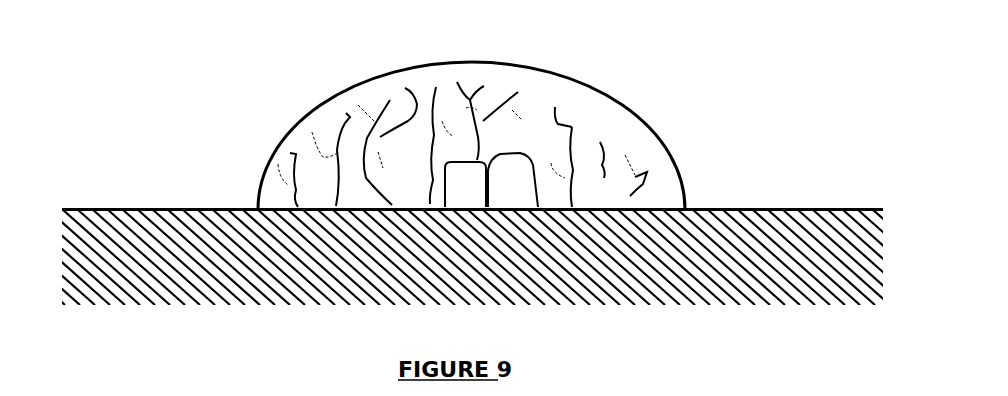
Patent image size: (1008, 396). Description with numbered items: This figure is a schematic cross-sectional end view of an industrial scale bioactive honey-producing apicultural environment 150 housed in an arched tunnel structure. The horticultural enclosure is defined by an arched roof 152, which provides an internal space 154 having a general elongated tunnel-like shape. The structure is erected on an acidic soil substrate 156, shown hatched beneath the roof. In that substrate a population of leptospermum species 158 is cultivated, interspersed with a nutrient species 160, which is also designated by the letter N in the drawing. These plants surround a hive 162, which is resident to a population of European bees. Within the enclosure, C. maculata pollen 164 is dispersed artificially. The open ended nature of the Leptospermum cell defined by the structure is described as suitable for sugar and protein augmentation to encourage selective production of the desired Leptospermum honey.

The apicultural environment 150 is at (168, 93).
The arched roof 152 is at (305, 114).
The internal space 154 is at (540, 140).
The acidic soil substrate 156 is at (649, 281).
The leptospermum species 158 is at (405, 89).
The nutrient species 160 is at (654, 186).
The hive 162 is at (478, 159).
The C. maculata pollen 164 is at (396, 146).